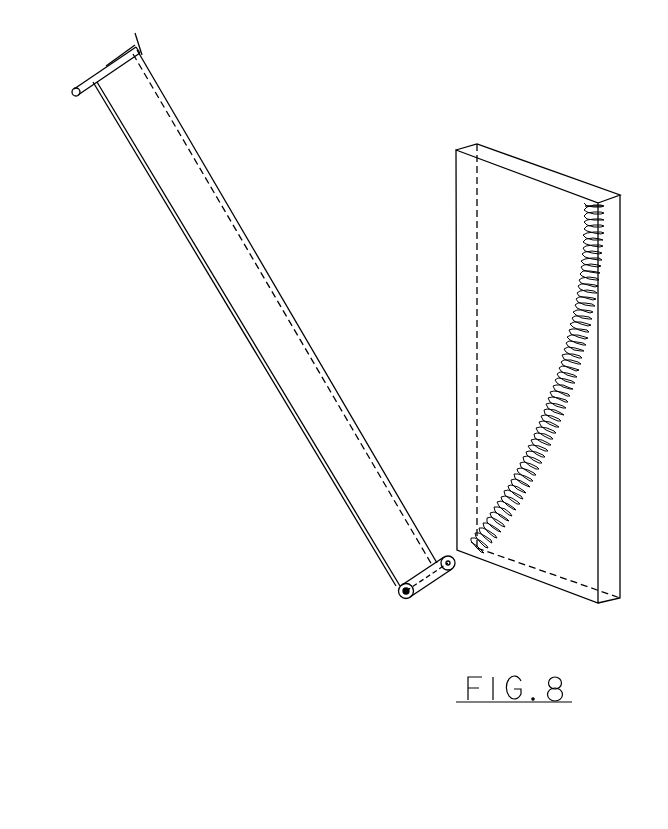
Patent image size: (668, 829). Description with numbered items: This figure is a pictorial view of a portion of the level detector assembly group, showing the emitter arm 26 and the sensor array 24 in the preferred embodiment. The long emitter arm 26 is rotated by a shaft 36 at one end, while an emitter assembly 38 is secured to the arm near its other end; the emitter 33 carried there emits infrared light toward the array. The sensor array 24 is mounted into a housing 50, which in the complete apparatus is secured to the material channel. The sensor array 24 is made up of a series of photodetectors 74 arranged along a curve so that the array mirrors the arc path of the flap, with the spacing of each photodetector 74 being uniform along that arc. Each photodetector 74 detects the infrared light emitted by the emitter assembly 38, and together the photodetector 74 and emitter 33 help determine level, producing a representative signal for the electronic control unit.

The sensor array 24 is at (538, 419).
The emitter arm 26 is at (225, 272).
The emitter 33 is at (398, 592).
The shaft 36 is at (87, 86).
The emitter assembly 38 is at (437, 588).
The housing 50 is at (467, 246).
The photodetector 74 is at (578, 304).